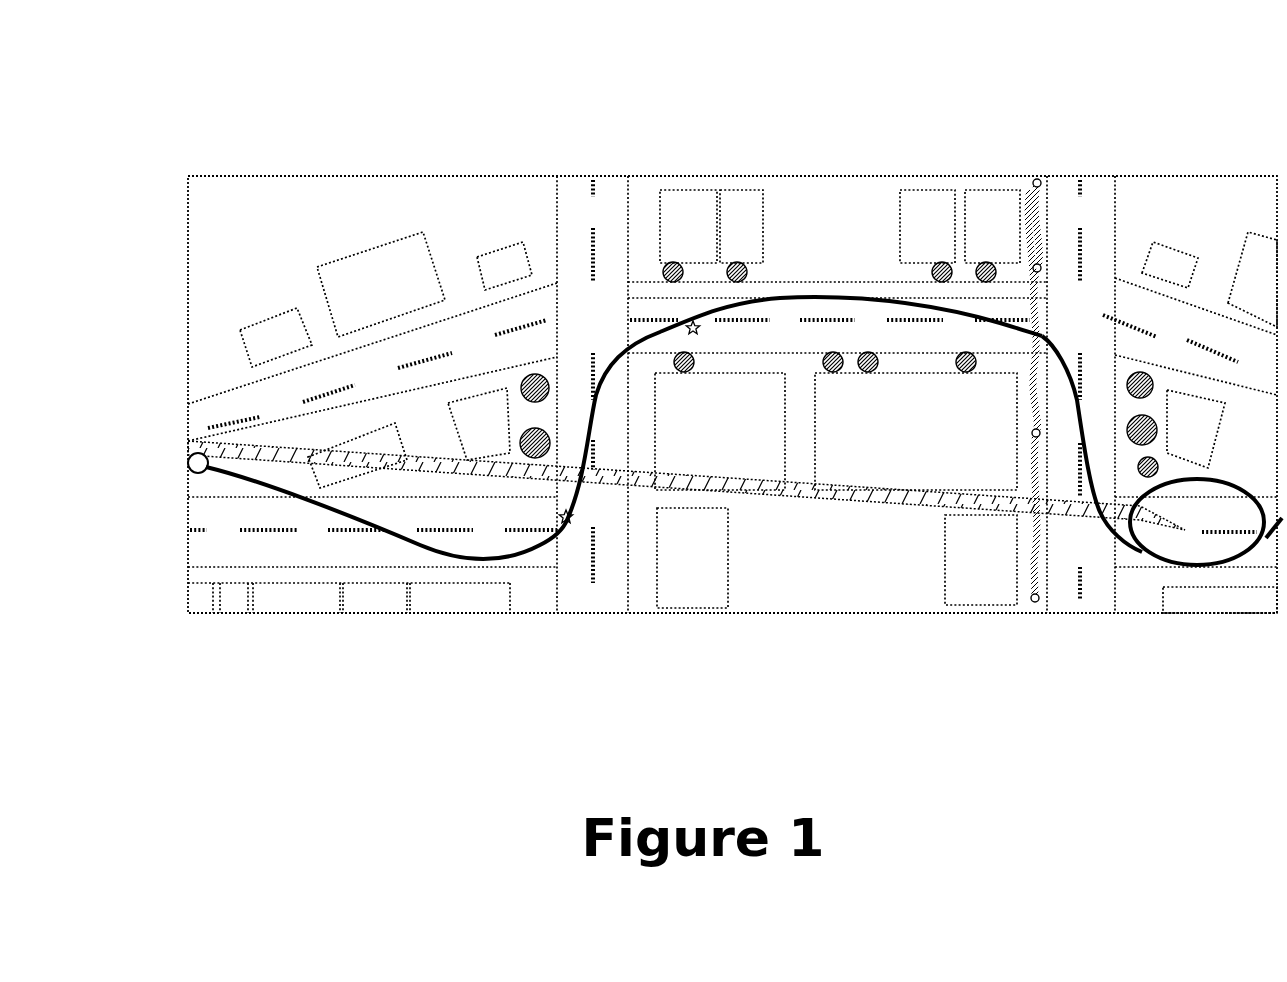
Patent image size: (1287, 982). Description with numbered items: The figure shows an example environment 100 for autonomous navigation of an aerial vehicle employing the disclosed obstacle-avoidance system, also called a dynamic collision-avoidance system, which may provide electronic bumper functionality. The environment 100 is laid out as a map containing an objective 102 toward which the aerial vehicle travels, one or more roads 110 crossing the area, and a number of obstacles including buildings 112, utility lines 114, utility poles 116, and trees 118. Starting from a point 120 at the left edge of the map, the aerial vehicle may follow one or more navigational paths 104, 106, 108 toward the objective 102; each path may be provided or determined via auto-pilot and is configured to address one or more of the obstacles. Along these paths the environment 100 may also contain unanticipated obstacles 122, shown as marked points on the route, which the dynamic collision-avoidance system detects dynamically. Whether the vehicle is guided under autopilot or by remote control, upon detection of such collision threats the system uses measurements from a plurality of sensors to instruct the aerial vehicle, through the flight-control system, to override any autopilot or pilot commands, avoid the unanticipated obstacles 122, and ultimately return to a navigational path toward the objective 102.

The environment 100 is at (235, 136).
The objective 102 is at (1206, 522).
The navigational path 104 is at (860, 505).
The navigational path 106 is at (468, 565).
The navigational path 108 is at (1044, 325).
The road 110 is at (592, 394).
The building 112 is at (836, 490).
The utility line 114 is at (1030, 212).
The utility pole 116 is at (1037, 183).
The tree 118 is at (535, 376).
The starting point 120 is at (187, 459).
The unanticipated obstacle 122 is at (693, 320).